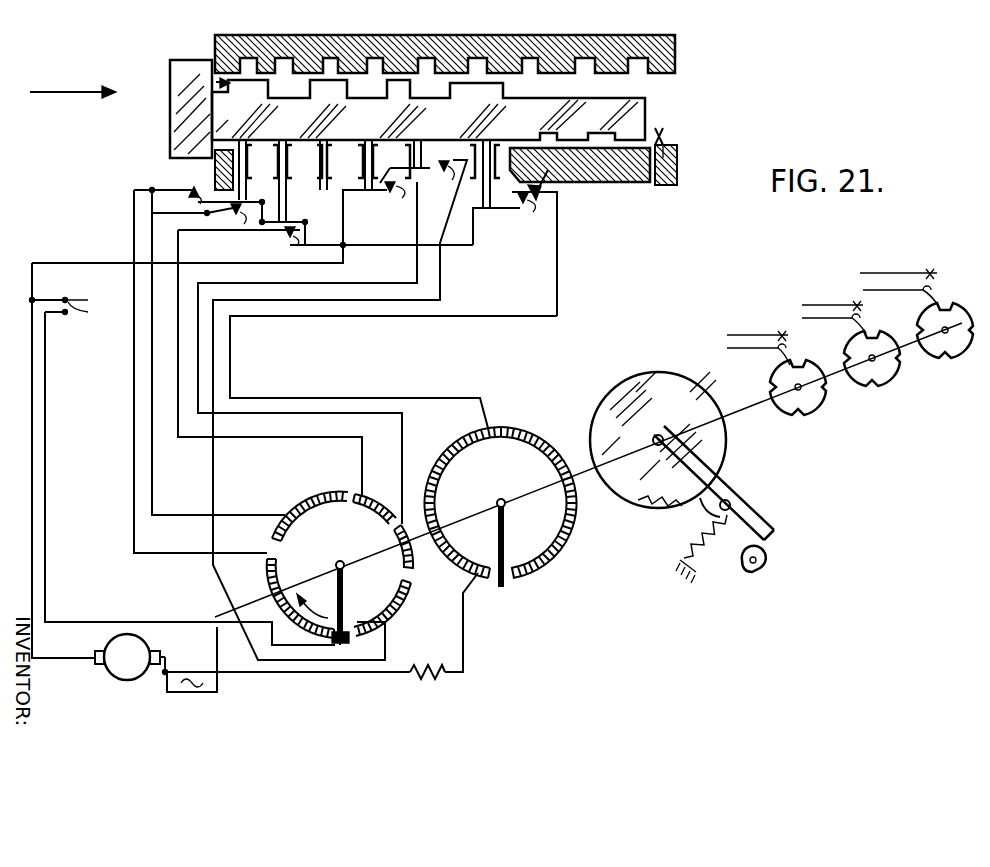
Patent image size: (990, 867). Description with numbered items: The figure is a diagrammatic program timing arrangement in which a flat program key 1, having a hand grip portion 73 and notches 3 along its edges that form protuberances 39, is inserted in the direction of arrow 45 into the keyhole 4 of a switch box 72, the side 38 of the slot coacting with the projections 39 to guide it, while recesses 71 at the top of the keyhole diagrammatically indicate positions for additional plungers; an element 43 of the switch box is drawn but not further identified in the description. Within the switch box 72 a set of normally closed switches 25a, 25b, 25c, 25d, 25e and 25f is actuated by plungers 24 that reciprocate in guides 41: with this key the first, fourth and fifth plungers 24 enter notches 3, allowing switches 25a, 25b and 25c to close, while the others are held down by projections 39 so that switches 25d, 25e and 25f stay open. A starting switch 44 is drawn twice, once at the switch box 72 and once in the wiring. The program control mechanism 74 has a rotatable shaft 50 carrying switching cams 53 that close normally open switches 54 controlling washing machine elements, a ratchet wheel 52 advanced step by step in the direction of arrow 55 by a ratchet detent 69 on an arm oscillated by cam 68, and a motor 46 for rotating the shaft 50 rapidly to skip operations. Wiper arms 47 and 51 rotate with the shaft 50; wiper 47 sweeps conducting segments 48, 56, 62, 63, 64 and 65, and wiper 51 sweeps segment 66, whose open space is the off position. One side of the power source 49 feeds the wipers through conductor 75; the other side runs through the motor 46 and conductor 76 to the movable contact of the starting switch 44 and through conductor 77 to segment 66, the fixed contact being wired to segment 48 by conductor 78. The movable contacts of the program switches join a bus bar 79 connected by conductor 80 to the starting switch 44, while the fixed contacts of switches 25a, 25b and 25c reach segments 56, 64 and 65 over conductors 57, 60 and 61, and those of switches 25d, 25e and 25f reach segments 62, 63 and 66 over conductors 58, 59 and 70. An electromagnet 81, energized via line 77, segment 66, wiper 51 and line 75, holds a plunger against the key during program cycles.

The key 1 is at (428, 110).
The notches 3 is at (371, 45).
The keyhole 4 is at (205, 56).
The plungers 24 is at (380, 181).
The switch 25a is at (199, 202).
The switch 25b is at (382, 206).
The switch 25c is at (428, 201).
The switch 25d is at (226, 223).
The switch 25e is at (276, 233).
The switch 25f is at (515, 254).
The side of the slot 38 is at (445, 45).
The protuberances 39 is at (465, 44).
The guides 41 is at (357, 167).
The lower rail 43 is at (580, 174).
The starting switch 44 is at (351, 221).
The arrow 45 is at (73, 80).
The motor 46 is at (125, 668).
The wiper arm 47 is at (356, 602).
The conducting segment 48 is at (340, 674).
The power source 49 is at (208, 667).
The rotatable shaft 50 is at (756, 429).
The wiper arm 51 is at (522, 543).
The ratchet wheel 52 is at (658, 455).
The switching cams 53 is at (871, 373).
The normally open switches 54 is at (832, 304).
The arrow 55 is at (314, 598).
The conducting segment 56 is at (300, 604).
The conductor 57 is at (182, 371).
The conductor 58 is at (218, 364).
The conductor 59 is at (266, 362).
The conductor 60 is at (307, 384).
The conductor 61 is at (326, 451).
The conducting segment 62 is at (309, 510).
The conducting segment 63 is at (374, 495).
The conducting segment 64 is at (419, 552).
The conducting segment 65 is at (393, 608).
The conducting segment 66 is at (567, 569).
The cam 68 is at (771, 562).
The ratchet detent 69 is at (713, 504).
The conductor 70 is at (393, 372).
The recesses 71 is at (341, 46).
The switch box 72 is at (684, 165).
The hand grip portion 73 is at (172, 109).
The program control mechanism 74 is at (500, 489).
The conductor 75 is at (588, 470).
The conductor 76 is at (63, 473).
The conductor 77 is at (321, 638).
The conductor 78 is at (190, 478).
The bus bar 79 is at (360, 239).
The conductor 80 is at (252, 265).
The electromagnet 81 is at (438, 684).